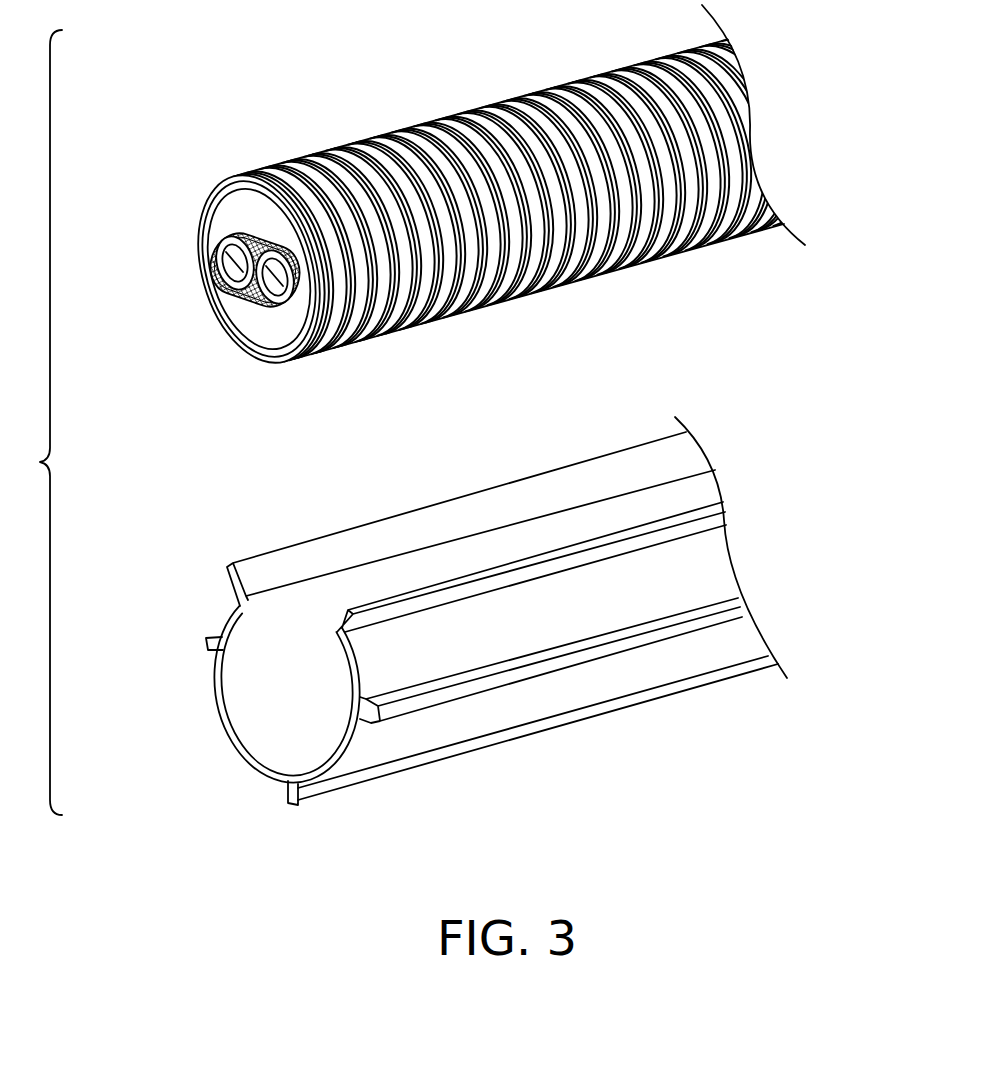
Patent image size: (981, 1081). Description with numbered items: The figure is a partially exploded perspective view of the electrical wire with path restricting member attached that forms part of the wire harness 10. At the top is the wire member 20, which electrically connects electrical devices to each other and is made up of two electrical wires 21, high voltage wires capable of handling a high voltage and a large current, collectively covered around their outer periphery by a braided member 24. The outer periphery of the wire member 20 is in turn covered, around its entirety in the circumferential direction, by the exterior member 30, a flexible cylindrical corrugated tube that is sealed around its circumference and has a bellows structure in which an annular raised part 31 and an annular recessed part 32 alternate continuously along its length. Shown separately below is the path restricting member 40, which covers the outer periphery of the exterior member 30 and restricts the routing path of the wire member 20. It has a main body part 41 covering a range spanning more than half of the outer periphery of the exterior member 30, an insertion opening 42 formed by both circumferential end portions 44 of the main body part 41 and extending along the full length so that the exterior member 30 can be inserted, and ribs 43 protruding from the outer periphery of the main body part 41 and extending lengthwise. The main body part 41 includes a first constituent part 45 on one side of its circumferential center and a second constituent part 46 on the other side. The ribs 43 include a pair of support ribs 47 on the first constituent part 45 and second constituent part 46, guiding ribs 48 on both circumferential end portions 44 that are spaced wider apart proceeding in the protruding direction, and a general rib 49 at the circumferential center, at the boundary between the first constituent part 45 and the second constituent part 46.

The wire harness 10 is at (506, 200).
The wire member 20 is at (230, 299).
The electrical wires 21 is at (262, 303).
The braided member 24 is at (235, 222).
The exterior member 30 is at (368, 143).
The annular raised part 31 is at (291, 188).
The annular recessed part 32 is at (272, 178).
The path restricting member 40 is at (464, 622).
The main body part 41 is at (229, 720).
The insertion opening 42 is at (272, 588).
The ribs 43 is at (540, 560).
The circumferential end portions 44 is at (300, 577).
The first constituent part 45 is at (466, 722).
The second constituent part 46 is at (219, 688).
The support ribs 47 is at (202, 643).
The guiding ribs 48 is at (372, 522).
The general rib 49 is at (402, 777).